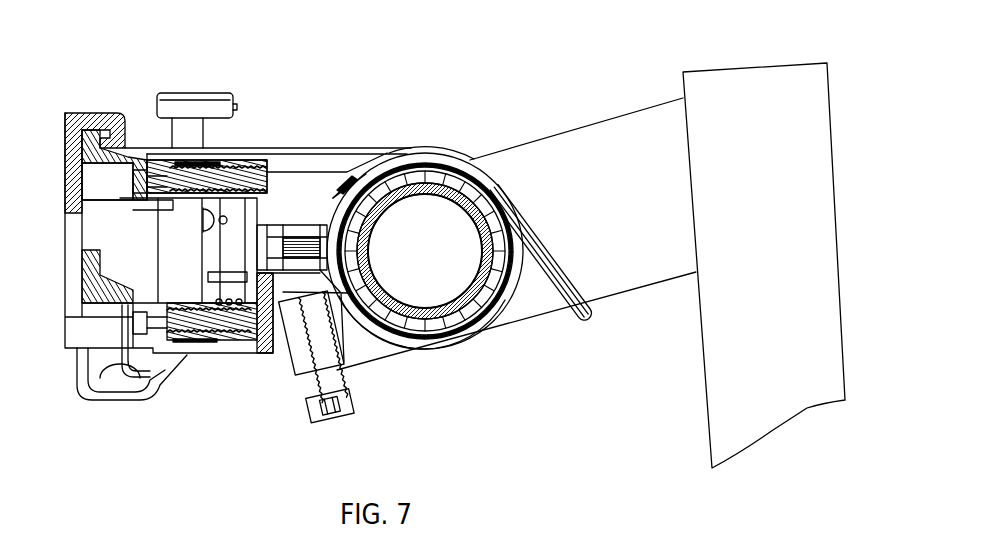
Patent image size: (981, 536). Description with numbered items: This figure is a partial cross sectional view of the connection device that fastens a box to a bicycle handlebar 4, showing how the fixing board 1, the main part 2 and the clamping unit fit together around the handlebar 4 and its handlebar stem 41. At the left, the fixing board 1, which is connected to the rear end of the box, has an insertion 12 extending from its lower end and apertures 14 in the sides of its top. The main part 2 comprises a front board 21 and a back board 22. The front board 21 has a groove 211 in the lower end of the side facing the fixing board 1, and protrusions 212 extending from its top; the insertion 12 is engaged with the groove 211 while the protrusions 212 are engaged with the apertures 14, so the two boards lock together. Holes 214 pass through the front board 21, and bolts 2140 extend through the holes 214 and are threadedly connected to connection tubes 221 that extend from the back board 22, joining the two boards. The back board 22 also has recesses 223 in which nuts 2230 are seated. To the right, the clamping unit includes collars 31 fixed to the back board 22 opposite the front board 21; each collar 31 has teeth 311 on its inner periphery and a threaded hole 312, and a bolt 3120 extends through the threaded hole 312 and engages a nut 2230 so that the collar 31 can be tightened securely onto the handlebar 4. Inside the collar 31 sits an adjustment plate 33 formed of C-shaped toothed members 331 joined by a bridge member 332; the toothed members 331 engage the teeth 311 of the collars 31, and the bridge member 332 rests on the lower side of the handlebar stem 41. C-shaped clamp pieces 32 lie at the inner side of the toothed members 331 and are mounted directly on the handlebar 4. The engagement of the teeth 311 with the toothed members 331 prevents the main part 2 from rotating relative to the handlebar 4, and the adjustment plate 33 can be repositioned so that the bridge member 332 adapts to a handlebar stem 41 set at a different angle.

The fixing board 1 is at (72, 233).
The insertion 12 is at (100, 378).
The apertures 14 is at (107, 114).
The main part 2 is at (245, 44).
The front board 21 is at (147, 152).
The back board 22 is at (222, 158).
The groove 211 is at (110, 367).
The protrusions 212 is at (82, 140).
The holes 214 is at (110, 178).
The bolts 2140 is at (248, 166).
The connection tubes 221 is at (272, 237).
The recesses 223 is at (307, 237).
The nuts 2230 is at (345, 182).
The collars 31 is at (425, 345).
The teeth 311 is at (397, 337).
The threaded hole 312 is at (348, 367).
The bolts 3120 is at (312, 412).
The clamp pieces 32 is at (477, 302).
The adjustment plate 33 is at (450, 157).
The toothed members 331 is at (437, 163).
The bridge member 332 is at (562, 287).
The handlebar 4 is at (463, 303).
The handlebar stem 41 is at (580, 177).